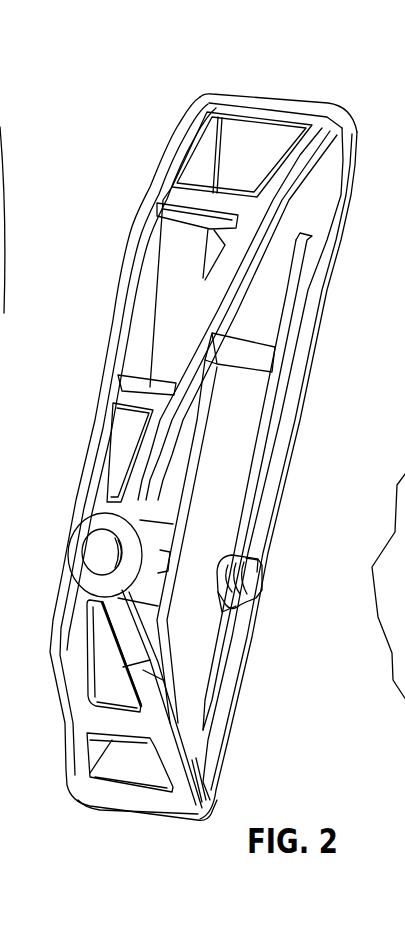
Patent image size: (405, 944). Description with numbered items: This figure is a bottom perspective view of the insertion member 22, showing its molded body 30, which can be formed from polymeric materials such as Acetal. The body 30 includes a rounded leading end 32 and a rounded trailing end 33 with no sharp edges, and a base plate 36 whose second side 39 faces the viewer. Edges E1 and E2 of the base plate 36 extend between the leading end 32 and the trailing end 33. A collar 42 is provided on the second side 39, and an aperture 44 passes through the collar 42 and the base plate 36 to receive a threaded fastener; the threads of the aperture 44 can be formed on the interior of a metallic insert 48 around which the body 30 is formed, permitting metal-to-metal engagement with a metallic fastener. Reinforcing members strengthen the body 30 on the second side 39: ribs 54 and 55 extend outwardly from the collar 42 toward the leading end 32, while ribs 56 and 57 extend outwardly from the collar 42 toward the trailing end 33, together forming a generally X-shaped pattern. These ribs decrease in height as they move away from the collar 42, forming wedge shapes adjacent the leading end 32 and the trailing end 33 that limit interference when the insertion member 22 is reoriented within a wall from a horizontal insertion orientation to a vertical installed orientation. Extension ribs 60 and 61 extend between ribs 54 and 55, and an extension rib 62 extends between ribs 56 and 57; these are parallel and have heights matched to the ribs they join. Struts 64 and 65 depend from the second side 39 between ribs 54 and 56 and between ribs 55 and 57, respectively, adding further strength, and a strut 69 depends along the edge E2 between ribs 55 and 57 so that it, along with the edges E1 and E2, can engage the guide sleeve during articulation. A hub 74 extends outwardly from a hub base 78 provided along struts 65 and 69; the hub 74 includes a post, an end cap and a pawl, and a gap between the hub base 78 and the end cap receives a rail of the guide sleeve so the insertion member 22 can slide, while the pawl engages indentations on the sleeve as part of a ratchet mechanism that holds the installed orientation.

The insertion member 22 is at (200, 447).
The body 30 is at (191, 458).
The leading end 32 is at (302, 98).
The trailing end 33 is at (137, 817).
The base plate 36 is at (205, 103).
The second side 39 is at (267, 160).
The collar 42 is at (88, 527).
The aperture 44 is at (77, 550).
The metallic insert 48 is at (112, 569).
The rib 54 is at (147, 218).
The rib 55 is at (228, 254).
The rib 56 is at (78, 648).
The rib 57 is at (138, 690).
The extension rib 60 is at (137, 397).
The extension rib 61 is at (207, 204).
The extension rib 62 is at (120, 722).
The strut 64 is at (10, 425).
The strut 65 is at (240, 406).
The strut 69 is at (265, 472).
The hub 74 is at (272, 620).
The hub base 78 is at (223, 622).
The edge E1 is at (4, 320).
The edge E2 is at (285, 443).